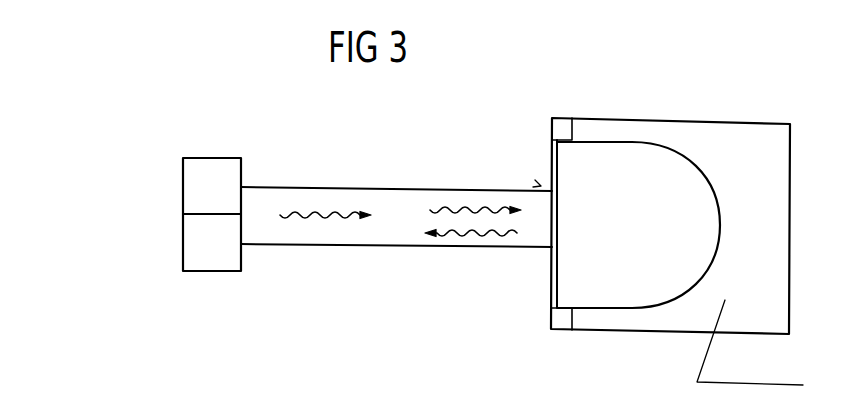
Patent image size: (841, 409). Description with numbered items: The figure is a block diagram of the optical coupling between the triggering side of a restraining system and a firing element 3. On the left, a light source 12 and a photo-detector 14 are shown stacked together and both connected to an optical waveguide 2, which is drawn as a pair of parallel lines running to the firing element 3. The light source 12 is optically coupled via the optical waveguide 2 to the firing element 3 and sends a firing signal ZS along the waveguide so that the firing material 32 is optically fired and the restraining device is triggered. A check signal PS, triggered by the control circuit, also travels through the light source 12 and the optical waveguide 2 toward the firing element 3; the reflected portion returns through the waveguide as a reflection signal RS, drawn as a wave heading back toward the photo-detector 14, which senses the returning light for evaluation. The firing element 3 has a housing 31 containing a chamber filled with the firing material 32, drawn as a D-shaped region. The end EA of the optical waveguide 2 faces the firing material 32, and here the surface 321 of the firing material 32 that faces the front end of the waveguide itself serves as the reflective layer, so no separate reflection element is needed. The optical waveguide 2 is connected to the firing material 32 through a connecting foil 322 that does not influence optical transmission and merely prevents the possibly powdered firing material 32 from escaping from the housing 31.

The light source 12 is at (0, 204).
The photo-detector 14 is at (0, 260).
The optical waveguide 2 is at (378, 188).
The firing signal ZS is at (311, 213).
The check signal PS is at (458, 210).
The reflection signal RS is at (463, 236).
The end of the optical waveguide EA is at (536, 181).
The firing element 3 is at (677, 210).
The housing 31 is at (761, 175).
The firing material 32 is at (661, 242).
The surface of the firing material 321 is at (570, 130).
The connecting foil 322 is at (568, 308).